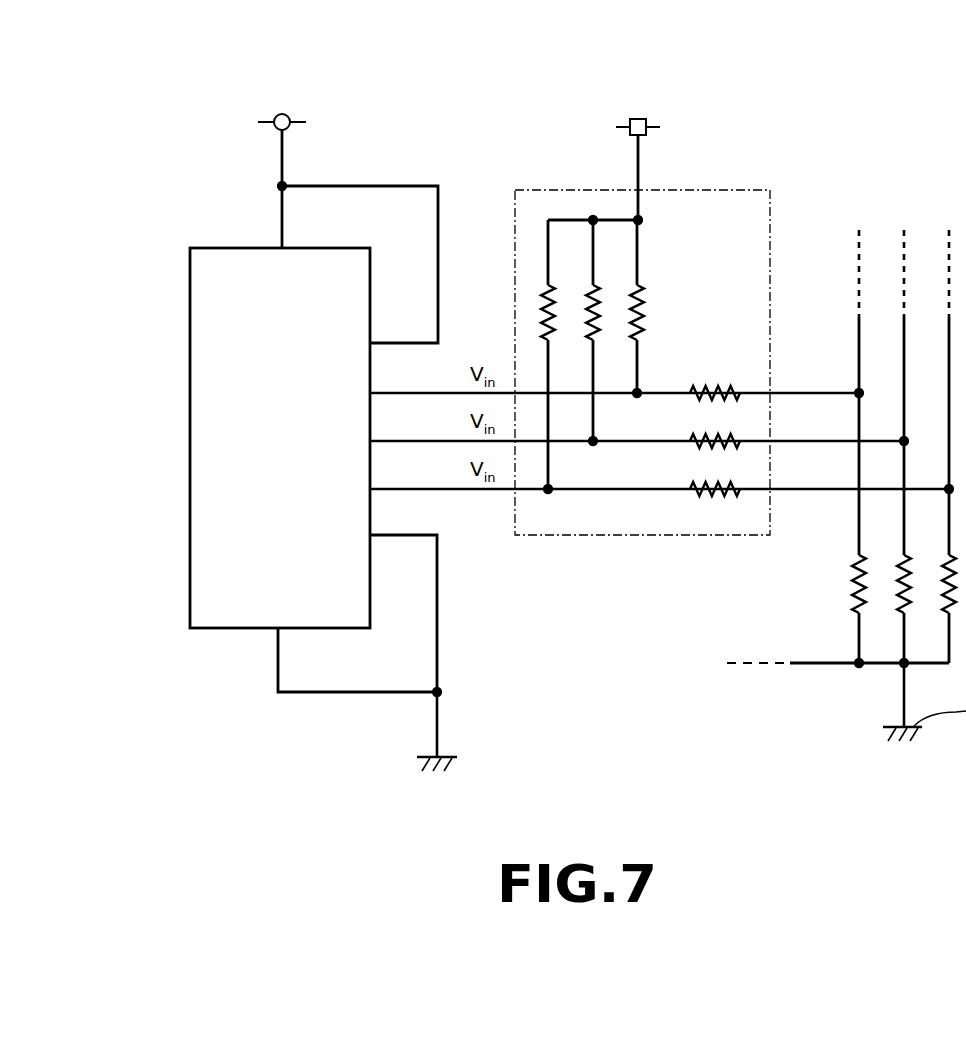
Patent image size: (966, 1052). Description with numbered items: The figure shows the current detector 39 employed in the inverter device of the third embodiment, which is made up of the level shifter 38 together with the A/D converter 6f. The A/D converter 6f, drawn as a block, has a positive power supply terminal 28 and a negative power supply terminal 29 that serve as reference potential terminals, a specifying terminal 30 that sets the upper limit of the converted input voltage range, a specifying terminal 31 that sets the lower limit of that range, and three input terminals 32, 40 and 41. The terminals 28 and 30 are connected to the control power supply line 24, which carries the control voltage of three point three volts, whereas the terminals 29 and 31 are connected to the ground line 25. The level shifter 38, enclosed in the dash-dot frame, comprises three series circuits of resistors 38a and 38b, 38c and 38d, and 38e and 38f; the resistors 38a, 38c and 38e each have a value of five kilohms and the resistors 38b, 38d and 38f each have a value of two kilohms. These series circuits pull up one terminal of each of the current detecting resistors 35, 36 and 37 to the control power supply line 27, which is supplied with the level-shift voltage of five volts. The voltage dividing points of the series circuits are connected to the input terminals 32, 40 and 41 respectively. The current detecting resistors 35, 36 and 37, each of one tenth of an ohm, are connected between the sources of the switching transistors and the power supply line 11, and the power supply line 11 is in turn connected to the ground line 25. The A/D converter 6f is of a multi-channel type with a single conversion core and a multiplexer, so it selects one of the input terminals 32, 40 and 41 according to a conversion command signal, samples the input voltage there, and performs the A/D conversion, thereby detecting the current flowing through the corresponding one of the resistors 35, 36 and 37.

The A/D converter 6f is at (190, 272).
The control power supply line 24 is at (296, 122).
The control power supply line 27 is at (652, 127).
The positive power supply terminal 28 is at (280, 246).
The negative power supply terminal 29 is at (276, 632).
The specifying terminal 30 is at (372, 340).
The specifying terminal 31 is at (372, 532).
The input terminal 32 is at (372, 390).
The input terminal 40 is at (372, 438).
The input terminal 41 is at (372, 486).
The ground line 25 is at (448, 757).
The level shifter 38 is at (757, 190).
The resistor 38a is at (646, 308).
The resistor 38b is at (716, 386).
The resistor 38c is at (604, 306).
The resistor 38d is at (714, 437).
The resistor 38e is at (560, 305).
The resistor 38f is at (714, 482).
The current detector 39 is at (493, 137).
The current detecting resistor 35 is at (849, 584).
The current detecting resistor 36 is at (893, 586).
The current detecting resistor 37 is at (938, 586).
The power supply line 11 is at (875, 668).